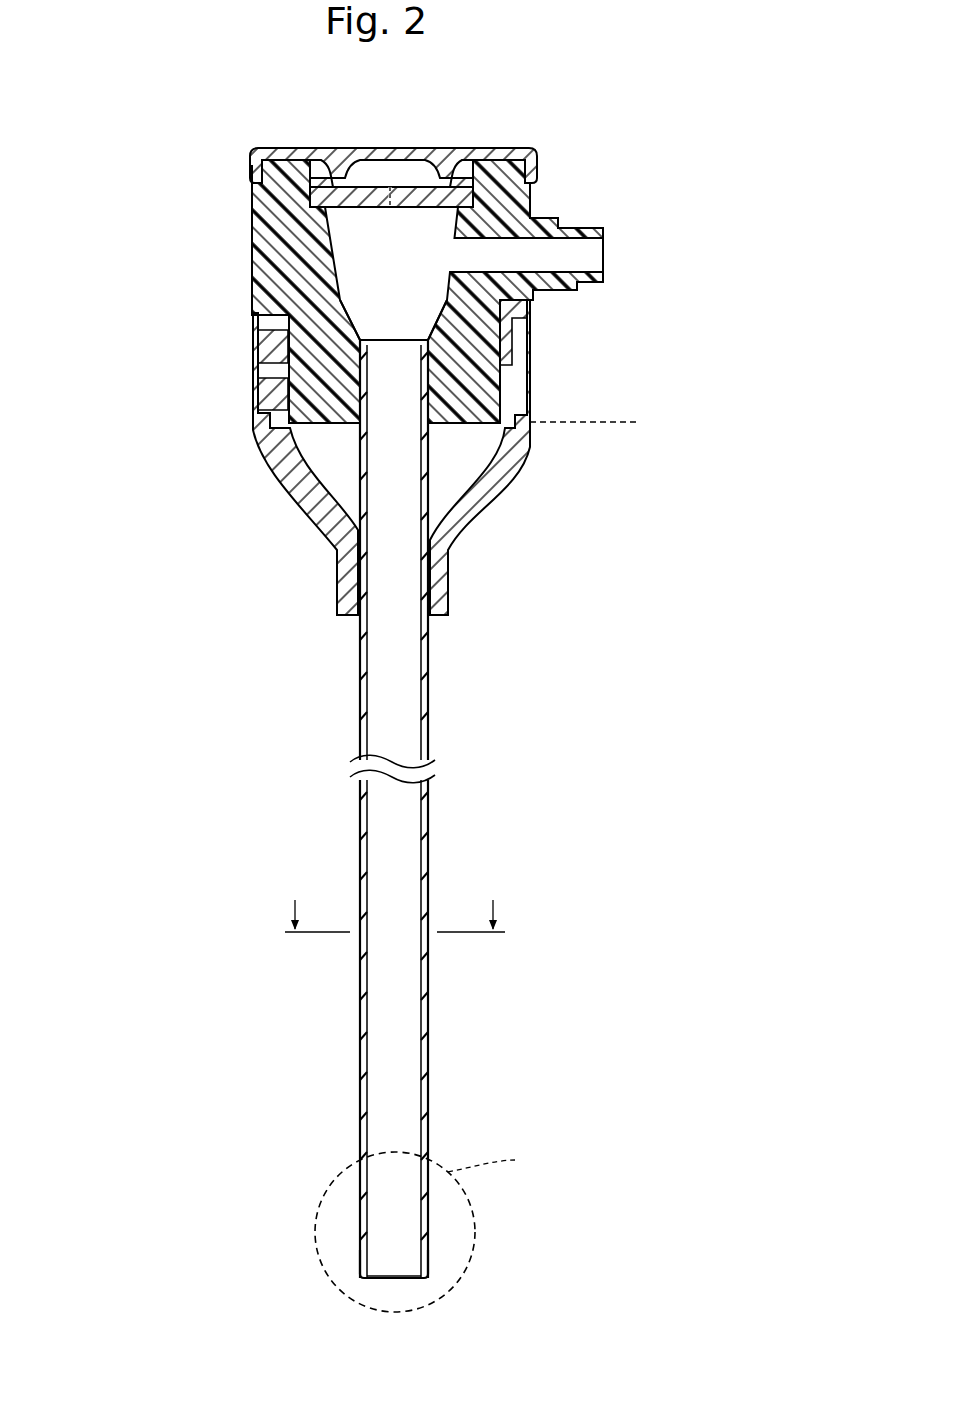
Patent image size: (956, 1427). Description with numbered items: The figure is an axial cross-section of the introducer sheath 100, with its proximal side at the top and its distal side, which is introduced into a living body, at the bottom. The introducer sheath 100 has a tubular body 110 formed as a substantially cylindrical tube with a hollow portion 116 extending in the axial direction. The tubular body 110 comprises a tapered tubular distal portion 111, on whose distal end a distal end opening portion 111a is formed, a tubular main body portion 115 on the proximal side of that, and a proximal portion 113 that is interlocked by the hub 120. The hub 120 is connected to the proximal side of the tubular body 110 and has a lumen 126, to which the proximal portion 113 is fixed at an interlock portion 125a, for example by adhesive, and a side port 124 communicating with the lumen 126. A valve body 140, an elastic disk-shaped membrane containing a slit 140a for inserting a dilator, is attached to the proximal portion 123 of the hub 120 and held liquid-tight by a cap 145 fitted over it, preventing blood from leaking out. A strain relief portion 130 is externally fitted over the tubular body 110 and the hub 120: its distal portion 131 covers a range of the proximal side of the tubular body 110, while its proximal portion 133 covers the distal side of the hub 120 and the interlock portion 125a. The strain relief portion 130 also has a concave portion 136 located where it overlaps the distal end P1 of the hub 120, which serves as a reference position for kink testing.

The introducer sheath 100 is at (113, 93).
The tubular body 110 is at (386, 829).
The tubular distal portion 111 is at (425, 1263).
The distal end opening portion 111a is at (400, 1280).
The proximal portion 113 is at (362, 350).
The tubular main body portion 115 is at (422, 972).
The hollow portion 116 is at (400, 1062).
The hub 120 is at (264, 248).
The proximal portion 123 is at (253, 185).
The side port 124 is at (560, 243).
The interlock portion 125a is at (350, 350).
The lumen 126 is at (356, 402).
The strain relief portion 130 is at (483, 484).
The distal portion 131 is at (437, 598).
The proximal portion 133 is at (520, 322).
The concave portion 136 is at (526, 418).
The valve body 140 is at (345, 190).
The slit 140a is at (390, 205).
The cap 145 is at (497, 160).
The distal end P1 is at (600, 422).